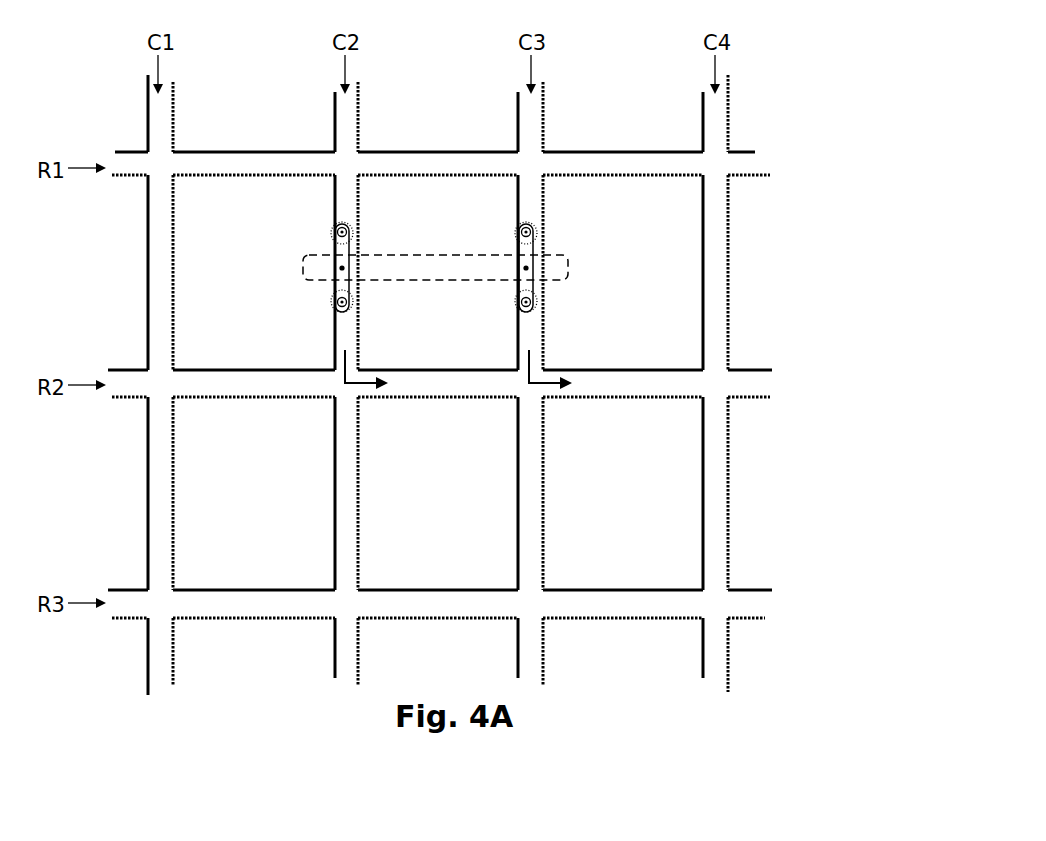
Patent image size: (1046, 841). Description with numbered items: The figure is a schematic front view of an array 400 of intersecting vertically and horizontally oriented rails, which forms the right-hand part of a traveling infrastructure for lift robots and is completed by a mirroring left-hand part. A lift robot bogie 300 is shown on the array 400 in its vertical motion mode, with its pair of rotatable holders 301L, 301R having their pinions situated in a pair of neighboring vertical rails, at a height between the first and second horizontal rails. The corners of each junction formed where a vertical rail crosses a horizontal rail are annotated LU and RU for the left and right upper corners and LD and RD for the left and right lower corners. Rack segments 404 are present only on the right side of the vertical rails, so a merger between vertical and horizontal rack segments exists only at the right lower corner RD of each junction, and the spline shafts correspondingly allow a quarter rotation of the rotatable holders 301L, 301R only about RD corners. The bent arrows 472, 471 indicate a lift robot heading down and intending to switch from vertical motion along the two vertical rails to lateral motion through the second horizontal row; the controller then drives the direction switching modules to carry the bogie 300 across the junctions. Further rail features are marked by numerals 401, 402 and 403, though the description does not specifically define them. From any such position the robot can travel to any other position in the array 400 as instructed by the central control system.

The lift robot bogie 300 is at (430, 256).
The left rotatable holder 301L is at (336, 248).
The right rotatable holder 301R is at (530, 248).
The array 400 is at (820, 108).
The bottom edge of tile 401 is at (638, 152).
The top edge of tile 402 is at (597, 175).
The right edge of tile 403 is at (702, 295).
The rack segments 404 is at (728, 303).
The bent arrow 471 is at (532, 386).
The bent arrow 472 is at (349, 386).